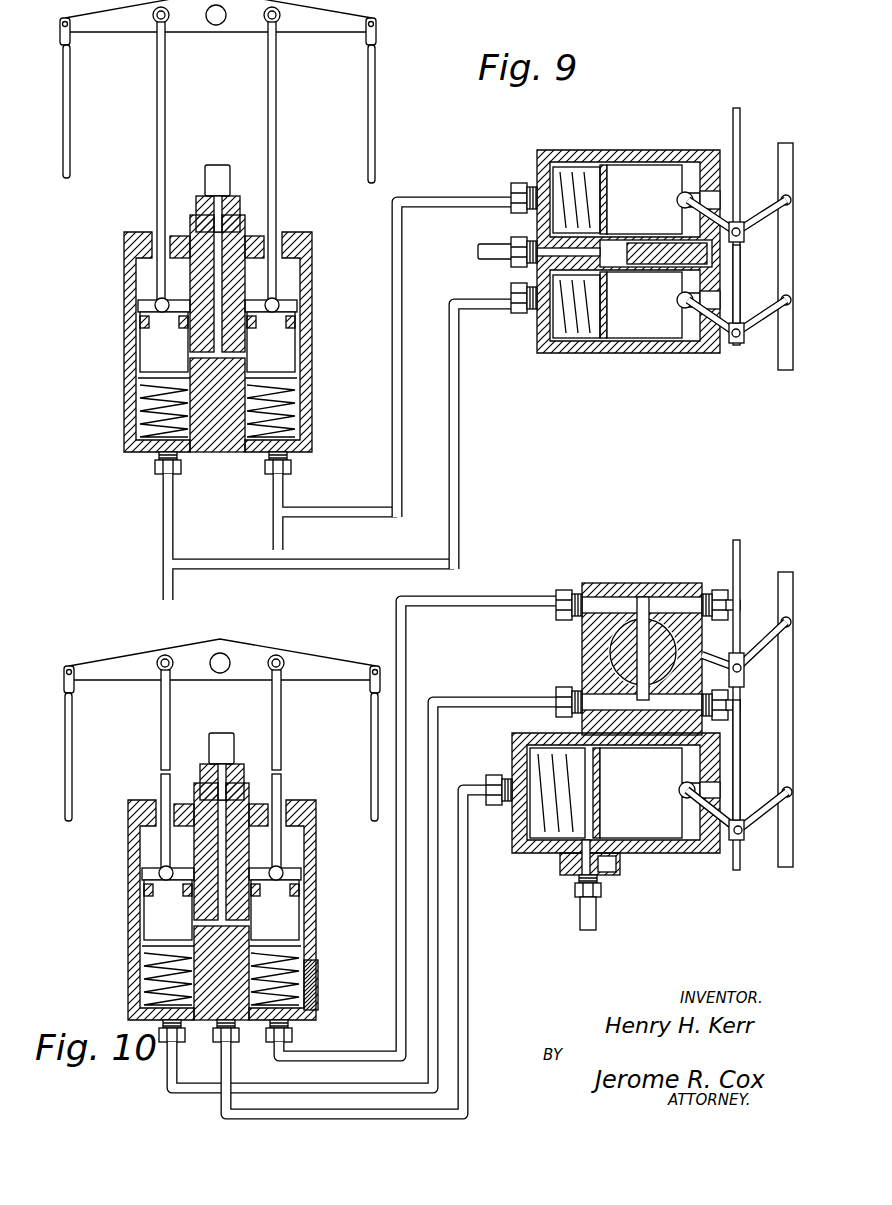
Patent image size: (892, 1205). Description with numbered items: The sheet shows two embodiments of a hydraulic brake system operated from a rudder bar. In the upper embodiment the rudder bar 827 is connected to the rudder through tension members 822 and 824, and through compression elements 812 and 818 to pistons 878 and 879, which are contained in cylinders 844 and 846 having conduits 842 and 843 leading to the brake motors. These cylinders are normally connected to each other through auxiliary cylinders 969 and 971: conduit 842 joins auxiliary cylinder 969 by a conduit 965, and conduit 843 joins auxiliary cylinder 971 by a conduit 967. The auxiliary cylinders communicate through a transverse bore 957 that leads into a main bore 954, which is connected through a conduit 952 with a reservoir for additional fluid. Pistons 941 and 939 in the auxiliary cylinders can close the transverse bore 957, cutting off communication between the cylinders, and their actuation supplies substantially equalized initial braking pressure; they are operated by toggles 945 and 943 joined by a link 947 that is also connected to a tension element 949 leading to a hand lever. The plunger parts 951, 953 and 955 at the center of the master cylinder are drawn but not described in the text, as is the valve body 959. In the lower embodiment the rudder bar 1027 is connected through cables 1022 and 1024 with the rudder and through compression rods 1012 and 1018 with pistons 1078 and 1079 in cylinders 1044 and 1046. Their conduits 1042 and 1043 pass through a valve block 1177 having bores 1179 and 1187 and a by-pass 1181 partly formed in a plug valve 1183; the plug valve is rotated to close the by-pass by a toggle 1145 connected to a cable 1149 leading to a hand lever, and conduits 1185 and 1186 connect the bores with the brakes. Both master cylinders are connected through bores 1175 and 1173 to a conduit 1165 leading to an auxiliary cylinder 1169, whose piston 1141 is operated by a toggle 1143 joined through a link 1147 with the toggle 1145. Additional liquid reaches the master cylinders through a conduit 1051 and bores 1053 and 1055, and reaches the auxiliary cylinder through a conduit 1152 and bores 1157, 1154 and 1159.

In FIG. 9, the compression element 812 is at (166, 108).
In FIG. 9, the compression element 818 is at (269, 97).
In FIG. 9, the tension member 822 is at (375, 93).
In FIG. 9, the tension member 824 is at (69, 91).
In FIG. 9, the rudder bar 827 is at (304, 22).
In FIG. 9, the conduit 842 is at (282, 484).
In FIG. 9, the conduit 843 is at (163, 504).
In FIG. 9, the cylinder 844 is at (312, 280).
In FIG. 9, the cylinder 846 is at (124, 280).
In FIG. 9, the piston 878 is at (152, 343).
In FIG. 9, the piston 879 is at (278, 343).
In FIG. 9, the piston 939 is at (660, 322).
In FIG. 9, the piston 941 is at (656, 180).
In FIG. 9, the toggle 943 is at (750, 338).
In FIG. 9, the toggle 945 is at (743, 240).
In FIG. 9, the link 947 is at (741, 289).
In FIG. 9, the tension element 949 is at (741, 128).
In FIG. 9, the central plunger 951 is at (220, 178).
In FIG. 9, the conduit 952 is at (478, 253).
In FIG. 9, the plunger collar 953 is at (232, 200).
In FIG. 9, the main bore 954 is at (523, 245).
In FIG. 9, the central piston 955 is at (235, 365).
In FIG. 9, the transverse bore 957 is at (528, 287).
In FIG. 9, the valve body 959 is at (630, 268).
In FIG. 9, the conduit 965 is at (401, 310).
In FIG. 9, the conduit 967 is at (458, 392).
In FIG. 9, the auxiliary cylinder 969 is at (592, 153).
In FIG. 9, the auxiliary cylinder 971 is at (576, 352).
In FIG. 10, the compression rod 1012 is at (170, 703).
In FIG. 10, the compression rod 1018 is at (281, 730).
In FIG. 10, the cable 1022 is at (371, 750).
In FIG. 10, the cable 1024 is at (72, 742).
In FIG. 10, the rudder bar 1027 is at (316, 672).
In FIG. 10, the conduit 1042 is at (314, 1060).
In FIG. 10, the conduit 1043 is at (167, 1083).
In FIG. 10, the cylinder 1044 is at (318, 848).
In FIG. 10, the cylinder 1046 is at (128, 857).
In FIG. 10, the conduit 1051 is at (224, 752).
In FIG. 10, the bore 1053 is at (234, 790).
In FIG. 10, the bore 1055 is at (208, 893).
In FIG. 10, the piston 1078 is at (160, 912).
In FIG. 10, the piston 1079 is at (285, 917).
In FIG. 10, the piston 1141 is at (672, 815).
In FIG. 10, the toggle 1143 is at (752, 840).
In FIG. 10, the toggle 1145 is at (717, 662).
In FIG. 10, the link 1147 is at (741, 762).
In FIG. 10, the cable 1149 is at (741, 558).
In FIG. 10, the conduit 1152 is at (580, 920).
In FIG. 10, the bore 1154 is at (612, 872).
In FIG. 10, the bore 1157 is at (566, 868).
In FIG. 10, the bore 1159 is at (627, 848).
In FIG. 10, the conduit 1165 is at (222, 1112).
In FIG. 10, the auxiliary cylinder 1169 is at (538, 848).
In FIG. 10, the bore 1173 is at (318, 990).
In FIG. 10, the bore 1175 is at (300, 968).
In FIG. 10, the valve block 1177 is at (664, 590).
In FIG. 10, the bore 1179 is at (612, 600).
In FIG. 10, the by-pass 1181 is at (620, 613).
In FIG. 10, the plug valve 1183 is at (615, 652).
In FIG. 10, the conduit 1185 is at (730, 600).
In FIG. 10, the conduit 1186 is at (730, 703).
In FIG. 10, the bore 1187 is at (568, 695).